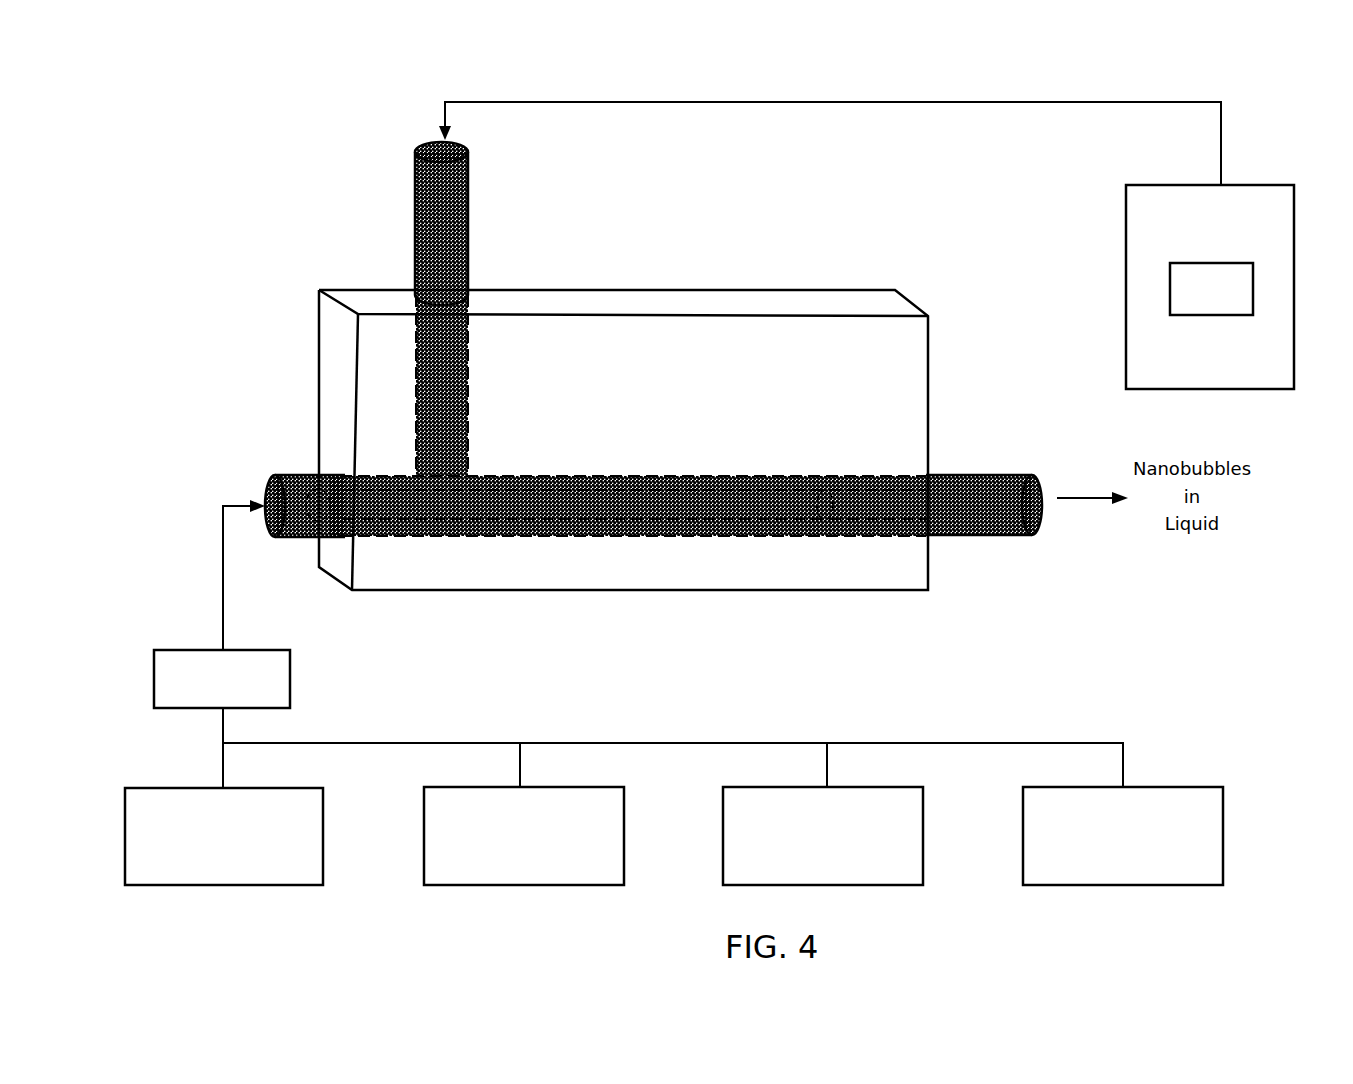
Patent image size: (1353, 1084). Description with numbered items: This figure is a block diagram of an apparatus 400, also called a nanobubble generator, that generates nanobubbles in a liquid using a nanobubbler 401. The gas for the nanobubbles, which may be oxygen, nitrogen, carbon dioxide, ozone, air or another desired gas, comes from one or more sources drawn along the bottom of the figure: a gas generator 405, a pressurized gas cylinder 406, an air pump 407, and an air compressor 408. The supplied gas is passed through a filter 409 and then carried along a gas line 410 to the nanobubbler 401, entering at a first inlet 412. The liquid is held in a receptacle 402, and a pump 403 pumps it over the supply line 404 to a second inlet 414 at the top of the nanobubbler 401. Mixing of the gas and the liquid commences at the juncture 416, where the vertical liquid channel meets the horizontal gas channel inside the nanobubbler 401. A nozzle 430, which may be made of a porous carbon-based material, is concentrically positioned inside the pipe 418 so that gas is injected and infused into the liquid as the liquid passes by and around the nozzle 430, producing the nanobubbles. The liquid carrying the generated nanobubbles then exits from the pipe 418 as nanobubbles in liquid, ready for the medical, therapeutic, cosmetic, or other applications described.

The apparatus 400 is at (312, 226).
The nanobubbler 401 is at (862, 290).
The receptacle 402 is at (1253, 184).
The pump 403 is at (1170, 290).
The supply line 404 is at (897, 97).
The gas generator 405 is at (122, 845).
The pressurized gas cylinder 406 is at (575, 888).
The air pump 407 is at (888, 888).
The air compressor 408 is at (1215, 887).
The filter 409 is at (292, 670).
The gas supply line 410 is at (218, 612).
The first inlet 412 is at (308, 472).
The second inlet 414 is at (468, 195).
The juncture 416 is at (492, 436).
The pipe 418 is at (960, 468).
The nozzle 430 is at (728, 497).